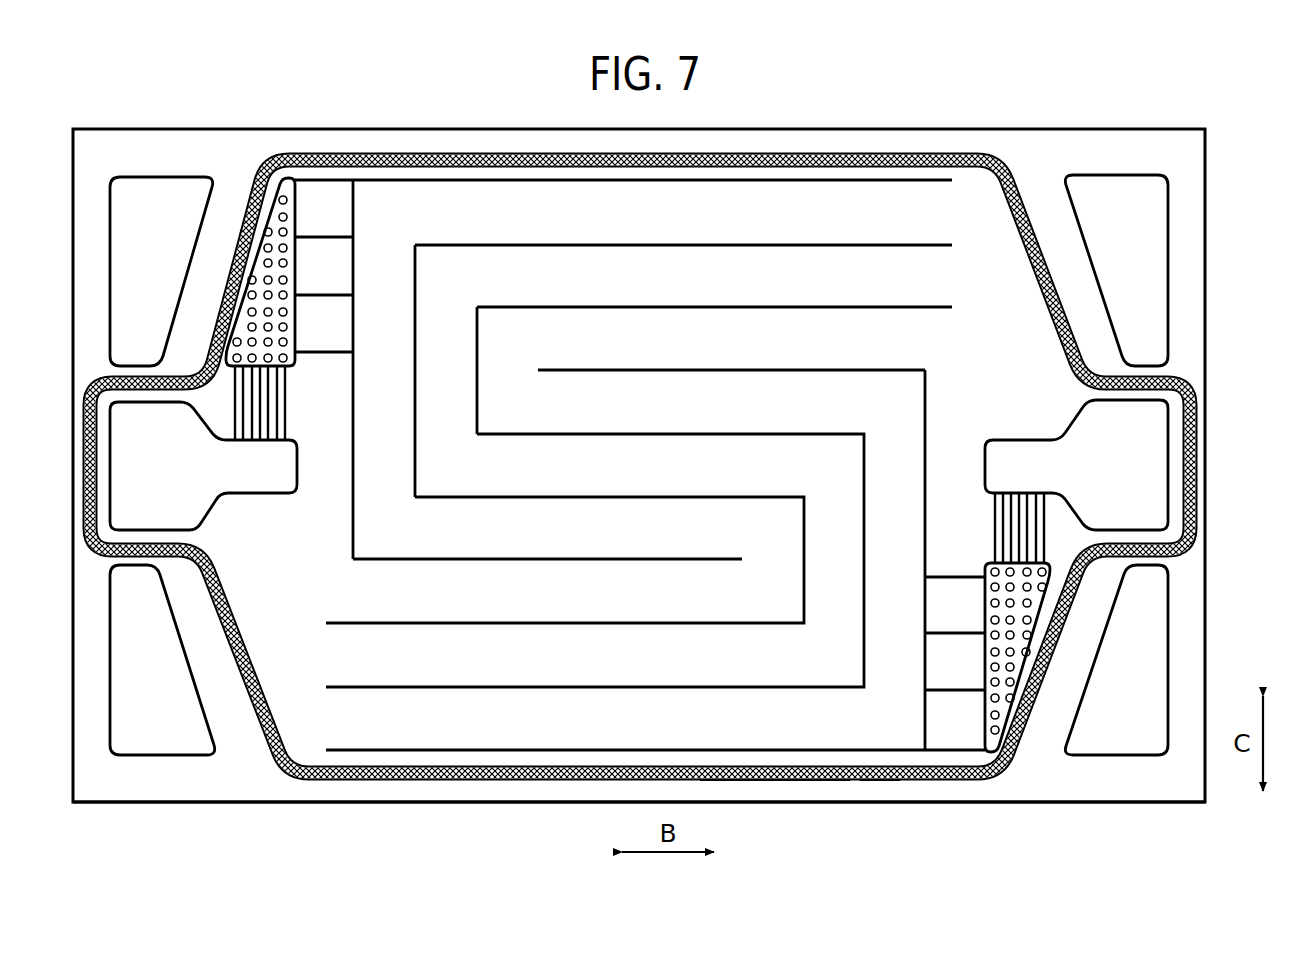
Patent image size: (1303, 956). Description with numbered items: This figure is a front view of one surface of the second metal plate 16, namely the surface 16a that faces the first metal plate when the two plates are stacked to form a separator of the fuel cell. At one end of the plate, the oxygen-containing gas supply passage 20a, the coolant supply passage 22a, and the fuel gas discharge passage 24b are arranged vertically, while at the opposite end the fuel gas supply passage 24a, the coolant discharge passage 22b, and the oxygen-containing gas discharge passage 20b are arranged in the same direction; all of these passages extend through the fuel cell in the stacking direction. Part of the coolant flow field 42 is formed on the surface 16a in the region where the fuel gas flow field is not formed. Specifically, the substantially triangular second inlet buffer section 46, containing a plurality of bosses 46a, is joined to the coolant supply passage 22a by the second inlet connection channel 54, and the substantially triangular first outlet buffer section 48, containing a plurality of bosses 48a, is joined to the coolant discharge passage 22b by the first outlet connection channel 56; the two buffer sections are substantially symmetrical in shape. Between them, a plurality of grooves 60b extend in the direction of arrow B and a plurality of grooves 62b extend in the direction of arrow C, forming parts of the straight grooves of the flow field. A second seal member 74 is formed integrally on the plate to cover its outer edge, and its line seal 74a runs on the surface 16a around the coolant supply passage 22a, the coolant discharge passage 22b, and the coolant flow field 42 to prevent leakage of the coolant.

The second metal plate 16 is at (320, 98).
The surface of the second metal plate 16a is at (1025, 780).
The coolant flow field 42 is at (926, 172).
The second seal member 74 is at (774, 782).
The line seal 74a is at (877, 779).
The oxygen-containing gas supply passage 20a is at (161, 271).
The oxygen-containing gas discharge passage 20b is at (1116, 660).
The coolant supply passage 22a is at (203, 466).
The coolant discharge passage 22b is at (1076, 465).
The fuel gas supply passage 24a is at (1116, 270).
The fuel gas discharge passage 24b is at (162, 660).
The second inlet buffer section 46 is at (298, 216).
The bosses 46a is at (288, 312).
The first outlet buffer section 48 is at (983, 705).
The bosses 48a is at (990, 588).
The second inlet connection channel 54 is at (292, 401).
The first outlet connection channel 56 is at (985, 540).
The grooves 60b is at (538, 750).
The grooves 62b is at (926, 490).